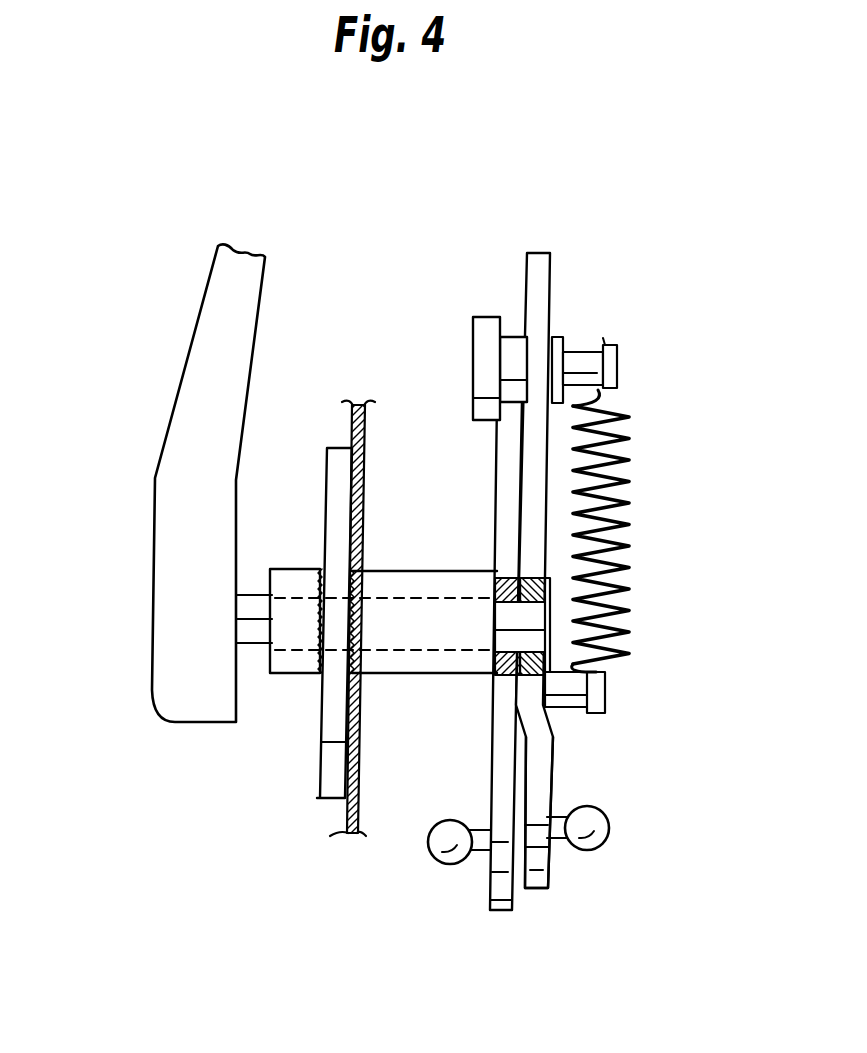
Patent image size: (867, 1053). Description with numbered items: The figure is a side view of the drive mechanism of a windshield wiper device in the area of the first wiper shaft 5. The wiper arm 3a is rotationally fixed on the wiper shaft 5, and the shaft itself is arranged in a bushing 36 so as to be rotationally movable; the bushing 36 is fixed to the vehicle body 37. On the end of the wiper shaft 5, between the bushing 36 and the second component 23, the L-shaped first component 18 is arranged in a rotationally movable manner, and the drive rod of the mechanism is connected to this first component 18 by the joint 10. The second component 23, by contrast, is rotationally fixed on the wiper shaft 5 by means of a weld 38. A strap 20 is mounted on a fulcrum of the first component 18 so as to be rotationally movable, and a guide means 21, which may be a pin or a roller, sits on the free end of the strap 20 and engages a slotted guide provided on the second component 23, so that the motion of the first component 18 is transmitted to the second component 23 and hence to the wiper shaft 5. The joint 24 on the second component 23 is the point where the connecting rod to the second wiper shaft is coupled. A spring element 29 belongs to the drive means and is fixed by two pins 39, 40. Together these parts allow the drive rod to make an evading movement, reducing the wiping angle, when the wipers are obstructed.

The wiper arm 3a is at (173, 393).
The wiper shaft 5 is at (290, 633).
The joint 10 is at (448, 865).
The first component 18 is at (487, 757).
The strap 20 is at (486, 314).
The guide means 21 is at (557, 337).
The second component 23 is at (553, 767).
The joint 24 is at (590, 851).
The spring element 29 is at (621, 490).
The bushing 36 is at (315, 677).
The vehicle body 37 is at (349, 838).
The weld 38 is at (548, 600).
The pin 39 is at (618, 358).
The pin 40 is at (607, 690).